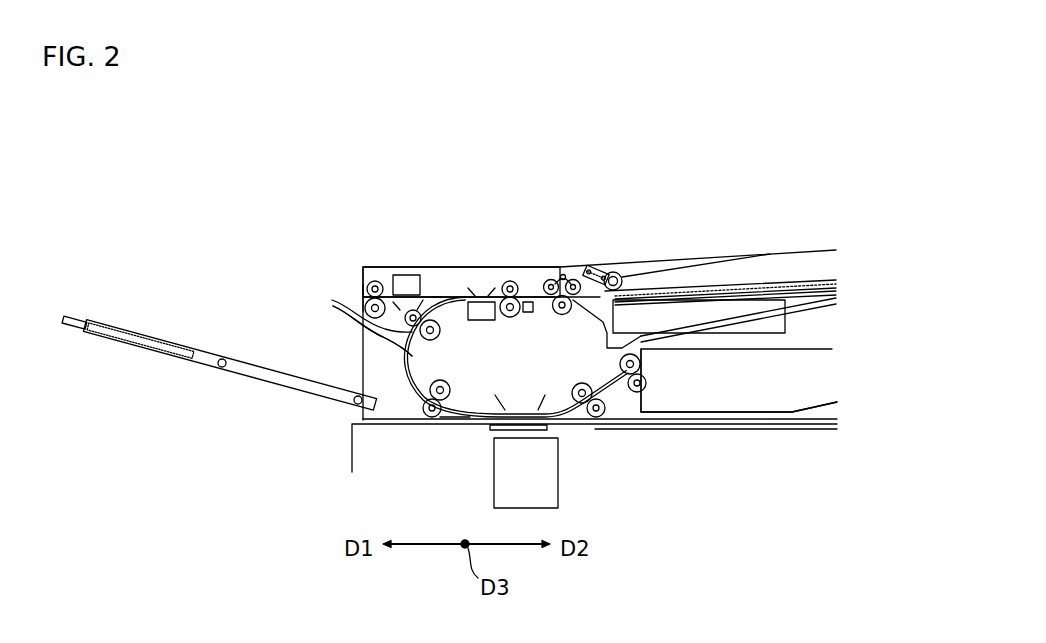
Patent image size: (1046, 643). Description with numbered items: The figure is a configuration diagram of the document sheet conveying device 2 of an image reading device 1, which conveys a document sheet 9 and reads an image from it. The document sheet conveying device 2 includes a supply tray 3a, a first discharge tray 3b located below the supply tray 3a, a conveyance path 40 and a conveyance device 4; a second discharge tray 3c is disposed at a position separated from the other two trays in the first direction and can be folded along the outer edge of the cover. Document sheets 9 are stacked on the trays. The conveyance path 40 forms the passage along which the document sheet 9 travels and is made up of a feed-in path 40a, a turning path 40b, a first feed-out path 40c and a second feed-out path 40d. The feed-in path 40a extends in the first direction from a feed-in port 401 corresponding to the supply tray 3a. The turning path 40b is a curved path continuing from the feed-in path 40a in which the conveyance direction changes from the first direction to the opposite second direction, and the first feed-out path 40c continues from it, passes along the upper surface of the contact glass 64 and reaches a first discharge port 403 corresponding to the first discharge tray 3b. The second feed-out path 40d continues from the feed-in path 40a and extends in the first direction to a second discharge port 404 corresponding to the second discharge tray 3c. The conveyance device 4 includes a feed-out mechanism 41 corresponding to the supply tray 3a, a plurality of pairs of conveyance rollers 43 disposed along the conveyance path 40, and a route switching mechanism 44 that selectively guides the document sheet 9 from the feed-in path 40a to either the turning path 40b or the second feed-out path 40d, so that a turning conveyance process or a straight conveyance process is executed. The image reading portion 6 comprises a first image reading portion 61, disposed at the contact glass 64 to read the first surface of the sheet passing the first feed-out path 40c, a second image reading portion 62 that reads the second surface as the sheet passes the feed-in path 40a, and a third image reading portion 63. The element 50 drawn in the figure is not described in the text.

The image reading device 1 is at (822, 150).
The document sheet conveying device 2 is at (712, 238).
The supply tray 3a is at (828, 304).
The first discharge tray 3b is at (735, 412).
The second discharge tray 3c is at (233, 375).
The conveyance device 4 is at (497, 250).
The image reading portion 6 is at (512, 339).
The document sheet 9 is at (752, 290).
The conveyance path 40 is at (450, 290).
The feed-in path 40a is at (540, 298).
The turning path 40b is at (385, 340).
The first feed-out path 40c is at (455, 418).
The second feed-out path 40d is at (387, 288).
The feed-out mechanism 41 is at (605, 263).
The pairs of conveyance rollers 43 is at (367, 312).
The route switching mechanism 44 is at (437, 297).
The sensor 50 is at (527, 306).
The first image reading portion 61 is at (558, 462).
The second image reading portion 62 is at (480, 323).
The third image reading portion 63 is at (408, 275).
The contact glass 64 is at (547, 429).
The feed-in port 401 is at (627, 274).
The first discharge port 403 is at (645, 370).
The second discharge port 404 is at (367, 297).